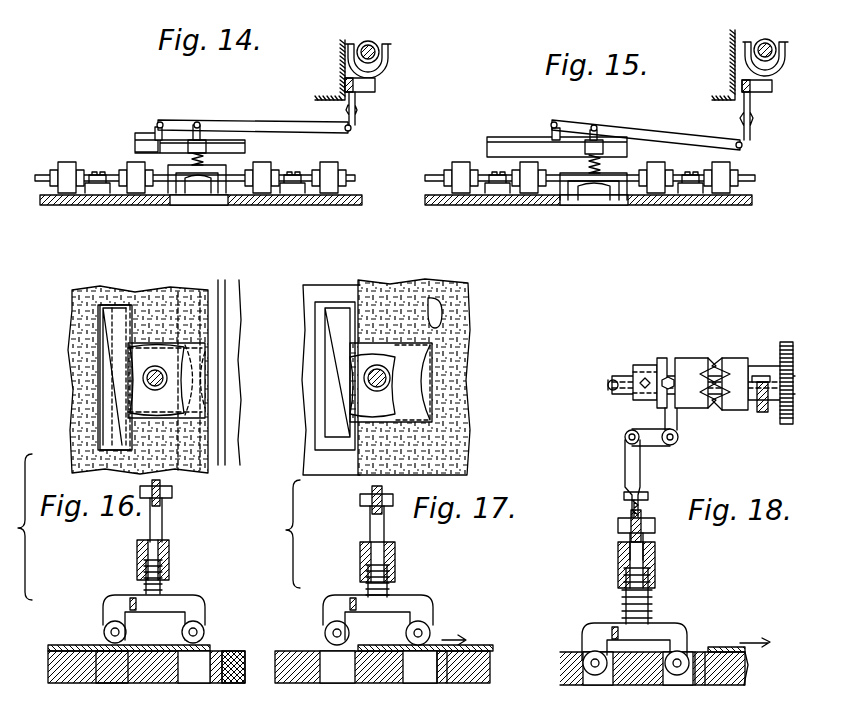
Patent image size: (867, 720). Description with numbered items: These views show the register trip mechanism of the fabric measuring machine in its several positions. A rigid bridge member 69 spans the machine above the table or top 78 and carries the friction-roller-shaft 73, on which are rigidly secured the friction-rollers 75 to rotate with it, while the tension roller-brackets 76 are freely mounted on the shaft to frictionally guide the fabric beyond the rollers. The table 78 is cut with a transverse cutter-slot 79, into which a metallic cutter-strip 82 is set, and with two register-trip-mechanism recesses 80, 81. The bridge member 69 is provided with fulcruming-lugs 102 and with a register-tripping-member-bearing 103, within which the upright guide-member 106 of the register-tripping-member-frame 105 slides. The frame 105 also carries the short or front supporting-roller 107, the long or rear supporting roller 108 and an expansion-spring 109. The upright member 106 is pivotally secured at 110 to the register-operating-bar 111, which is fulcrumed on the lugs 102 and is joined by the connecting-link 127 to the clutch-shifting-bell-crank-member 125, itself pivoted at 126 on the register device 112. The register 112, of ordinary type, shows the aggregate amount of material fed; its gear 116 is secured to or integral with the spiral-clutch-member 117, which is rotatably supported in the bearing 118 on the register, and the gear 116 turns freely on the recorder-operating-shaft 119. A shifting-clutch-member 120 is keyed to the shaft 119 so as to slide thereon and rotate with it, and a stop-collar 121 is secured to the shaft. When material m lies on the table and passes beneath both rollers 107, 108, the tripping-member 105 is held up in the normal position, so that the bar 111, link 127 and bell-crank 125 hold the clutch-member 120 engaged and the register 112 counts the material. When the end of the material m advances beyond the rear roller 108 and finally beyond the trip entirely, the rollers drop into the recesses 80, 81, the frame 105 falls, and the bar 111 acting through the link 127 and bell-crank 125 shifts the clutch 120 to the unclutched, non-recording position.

In FIG. 14, the rigid bridge member 69 is at (138, 134).
In FIG. 15, the rigid bridge member 69 is at (503, 143).
In FIG. 16, the rigid bridge member 69 is at (150, 356).
In FIG. 14, the friction-roller-shaft 73 is at (348, 174).
In FIG. 15, the friction-roller-shaft 73 is at (590, 178).
In FIG. 14, the friction-rollers 75 is at (68, 163).
In FIG. 15, the friction-rollers 75 is at (591, 177).
In FIG. 14, the tension roller-brackets 76 is at (100, 194).
In FIG. 15, the tension roller-brackets 76 is at (594, 182).
In FIG. 14, the table or top of the machine 78 is at (355, 207).
In FIG. 15, the table or top of the machine 78 is at (735, 207).
In FIG. 16, the table or top of the machine 78 is at (232, 357).
In FIG. 17, the table or top of the machine 78 is at (345, 292).
In FIG. 18, the table or top of the machine 78 is at (730, 688).
In FIG. 16, the transverse cutter-slot 79 is at (222, 284).
In FIG. 17, the transverse cutter-slot 79 is at (442, 322).
In FIG. 18, the transverse cutter-slot 79 is at (700, 668).
In FIG. 16, the register-trip-mechanism recess 80 is at (96, 388).
In FIG. 17, the register-trip-mechanism recess 80 is at (318, 305).
In FIG. 18, the register-trip-mechanism recess 80 is at (595, 688).
In FIG. 14, the register-trip-mechanism recess 81 is at (198, 206).
In FIG. 15, the register-trip-mechanism recess 81 is at (625, 208).
In FIG. 16, the register-trip-mechanism recess 81 is at (194, 684).
In FIG. 17, the register-trip-mechanism recess 81 is at (418, 678).
In FIG. 18, the register-trip-mechanism recess 81 is at (678, 688).
In FIG. 16, the metallic cutter-strip 82 is at (222, 333).
In FIG. 14, the fulcruming-lugs 102 is at (160, 122).
In FIG. 15, the fulcruming-lugs 102 is at (556, 134).
In FIG. 14, the register-tripping-member-bearing 103 is at (205, 141).
In FIG. 15, the register-tripping-member-bearing 103 is at (594, 147).
In FIG. 16, the register-tripping-member-bearing 103 is at (169, 554).
In FIG. 17, the register-tripping-member-bearing 103 is at (396, 552).
In FIG. 18, the register-tripping-member-bearing 103 is at (656, 554).
In FIG. 14, the register-tripping-member-frame 105 is at (222, 170).
In FIG. 15, the register-tripping-member-frame 105 is at (612, 178).
In FIG. 16, the register-tripping-member-frame 105 is at (160, 350).
In FIG. 17, the register-tripping-member-frame 105 is at (420, 420).
In FIG. 18, the register-tripping-member-frame 105 is at (634, 641).
In FIG. 16, the upright guide-member 106 is at (165, 386).
In FIG. 17, the upright guide-member 106 is at (376, 453).
In FIG. 18, the upright guide-member 106 is at (631, 555).
In FIG. 14, the short or front supporting-roller 107 is at (205, 192).
In FIG. 15, the short or front supporting-roller 107 is at (597, 201).
In FIG. 16, the short or front supporting-roller 107 is at (196, 390).
In FIG. 17, the short or front supporting-roller 107 is at (420, 380).
In FIG. 18, the short or front supporting-roller 107 is at (677, 663).
In FIG. 16, the long or rear supporting roller 108 is at (106, 412).
In FIG. 17, the long or rear supporting roller 108 is at (337, 476).
In FIG. 18, the long or rear supporting roller 108 is at (595, 663).
In FIG. 14, the expansion-spring 109 is at (197, 159).
In FIG. 15, the expansion-spring 109 is at (594, 164).
In FIG. 16, the expansion-spring 109 is at (145, 588).
In FIG. 17, the expansion-spring 109 is at (377, 581).
In FIG. 18, the expansion-spring 109 is at (651, 600).
In FIG. 14, the pivot 110 is at (199, 122).
In FIG. 15, the pivot 110 is at (593, 132).
In FIG. 14, the register-operating-bar 111 is at (280, 122).
In FIG. 15, the register-operating-bar 111 is at (695, 143).
In FIG. 18, the register-operating-bar 111 is at (633, 512).
In FIG. 14, the register device 112 is at (345, 42).
In FIG. 15, the register device 112 is at (735, 33).
In FIG. 18, the gear 116 is at (787, 426).
In FIG. 18, the spiral-clutch-member 117 is at (735, 365).
In FIG. 18, the bearing 118 is at (755, 368).
In FIG. 18, the recorder-operating-shaft 119 is at (612, 378).
In FIG. 18, the shifting-clutch-member 120 is at (687, 362).
In FIG. 18, the stop-collar 121 is at (648, 362).
In FIG. 14, the clutch-shifting-bell-crank-member 125 is at (386, 70).
In FIG. 15, the clutch-shifting-bell-crank-member 125 is at (765, 59).
In FIG. 18, the clutch-shifting-bell-crank-member 125 is at (674, 424).
In FIG. 14, the pivot 126 is at (362, 92).
In FIG. 15, the pivot 126 is at (757, 86).
In FIG. 18, the pivot 126 is at (670, 449).
In FIG. 14, the connecting-link 127 is at (355, 118).
In FIG. 15, the connecting-link 127 is at (746, 116).
In FIG. 18, the connecting-link 127 is at (628, 472).
In FIG. 14, the material m is at (190, 205).
In FIG. 16, the material m is at (162, 330).
In FIG. 17, the material m is at (468, 298).
In FIG. 18, the material m is at (723, 647).